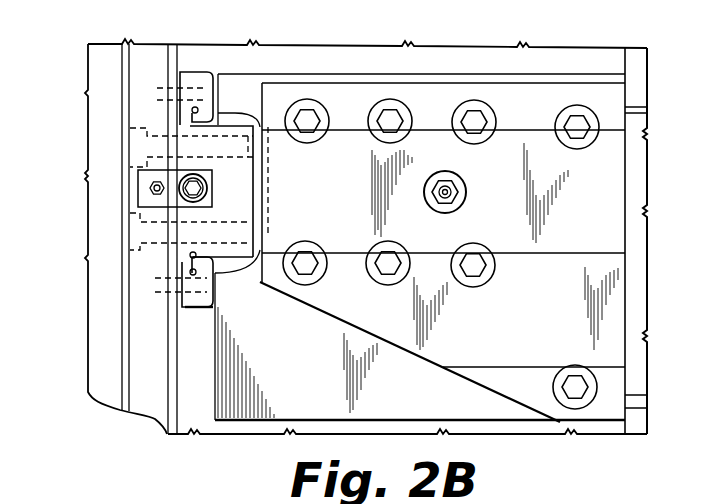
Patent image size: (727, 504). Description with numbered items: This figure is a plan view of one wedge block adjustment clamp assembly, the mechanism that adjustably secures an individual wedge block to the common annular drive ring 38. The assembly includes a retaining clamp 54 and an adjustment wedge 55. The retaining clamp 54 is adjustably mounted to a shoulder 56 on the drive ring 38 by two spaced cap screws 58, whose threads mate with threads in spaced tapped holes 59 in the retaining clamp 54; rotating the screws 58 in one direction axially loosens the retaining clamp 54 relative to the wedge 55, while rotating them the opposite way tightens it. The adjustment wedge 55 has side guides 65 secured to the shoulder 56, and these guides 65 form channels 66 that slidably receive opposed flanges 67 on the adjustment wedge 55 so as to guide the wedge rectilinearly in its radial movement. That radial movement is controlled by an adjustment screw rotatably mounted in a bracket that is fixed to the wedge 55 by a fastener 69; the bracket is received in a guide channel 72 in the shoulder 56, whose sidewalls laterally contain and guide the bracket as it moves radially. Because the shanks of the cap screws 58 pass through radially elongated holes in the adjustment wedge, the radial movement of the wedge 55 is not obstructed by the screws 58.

The drive ring 38 is at (110, 373).
The retaining clamp 54 is at (240, 210).
The adjustment wedge 55 is at (187, 235).
The shoulder 56 is at (135, 298).
The cap screws 58 is at (130, 147).
The tapped holes 59 is at (232, 125).
The side guides 65 is at (200, 77).
The channels 66 is at (183, 80).
The flanges 67 is at (183, 115).
The fastener 69 is at (207, 187).
The guide channel 72 is at (150, 188).